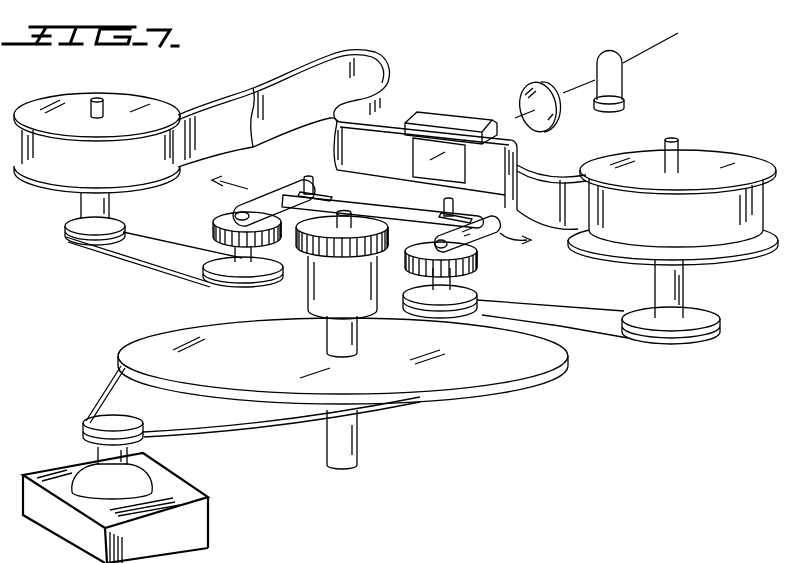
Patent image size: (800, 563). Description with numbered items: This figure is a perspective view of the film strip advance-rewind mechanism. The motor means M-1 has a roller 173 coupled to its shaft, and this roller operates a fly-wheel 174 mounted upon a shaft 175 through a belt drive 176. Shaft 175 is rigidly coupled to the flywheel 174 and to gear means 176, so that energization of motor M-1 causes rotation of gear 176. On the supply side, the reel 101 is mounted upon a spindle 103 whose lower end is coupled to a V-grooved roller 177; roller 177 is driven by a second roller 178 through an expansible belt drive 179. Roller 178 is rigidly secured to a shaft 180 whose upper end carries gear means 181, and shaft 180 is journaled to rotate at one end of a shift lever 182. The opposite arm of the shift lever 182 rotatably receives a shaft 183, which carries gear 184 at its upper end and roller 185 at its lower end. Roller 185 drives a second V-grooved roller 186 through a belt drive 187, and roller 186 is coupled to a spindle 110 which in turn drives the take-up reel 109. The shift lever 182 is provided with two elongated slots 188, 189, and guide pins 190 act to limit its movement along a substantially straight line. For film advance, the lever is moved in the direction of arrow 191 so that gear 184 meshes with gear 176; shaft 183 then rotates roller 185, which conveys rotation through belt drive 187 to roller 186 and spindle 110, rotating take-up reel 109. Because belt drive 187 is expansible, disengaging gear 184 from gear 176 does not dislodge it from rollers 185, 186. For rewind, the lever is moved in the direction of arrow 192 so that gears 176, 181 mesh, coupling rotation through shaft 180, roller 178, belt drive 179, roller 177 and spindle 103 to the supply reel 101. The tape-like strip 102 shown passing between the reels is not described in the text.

The reel 101 is at (61, 92).
The tape 102 is at (388, 70).
The spindle 103 is at (105, 98).
The take-up reel 109 is at (722, 153).
The spindle 110 is at (686, 286).
The roller 173 is at (122, 419).
The fly-wheel 174 is at (162, 326).
The shaft 175 is at (358, 447).
The belt drive / gear means 176 is at (106, 390).
The V-grooved roller 177 is at (125, 223).
The roller 178 is at (233, 292).
The expansible belt drive 179 is at (152, 267).
The shaft 180 is at (228, 248).
The gear means 181 is at (217, 213).
The shift lever 182 is at (286, 190).
The shaft 183 is at (478, 288).
The gear 184 is at (480, 259).
The roller 185 is at (424, 288).
The V-grooved roller 186 is at (712, 316).
The belt drive 187 is at (562, 302).
The elongated slot 188 is at (321, 177).
The elongated slot 189 is at (455, 211).
The guide pins 190 is at (308, 180).
The arrow 191 is at (237, 172).
The arrow 192 is at (533, 247).
The motor means M-1 is at (208, 519).